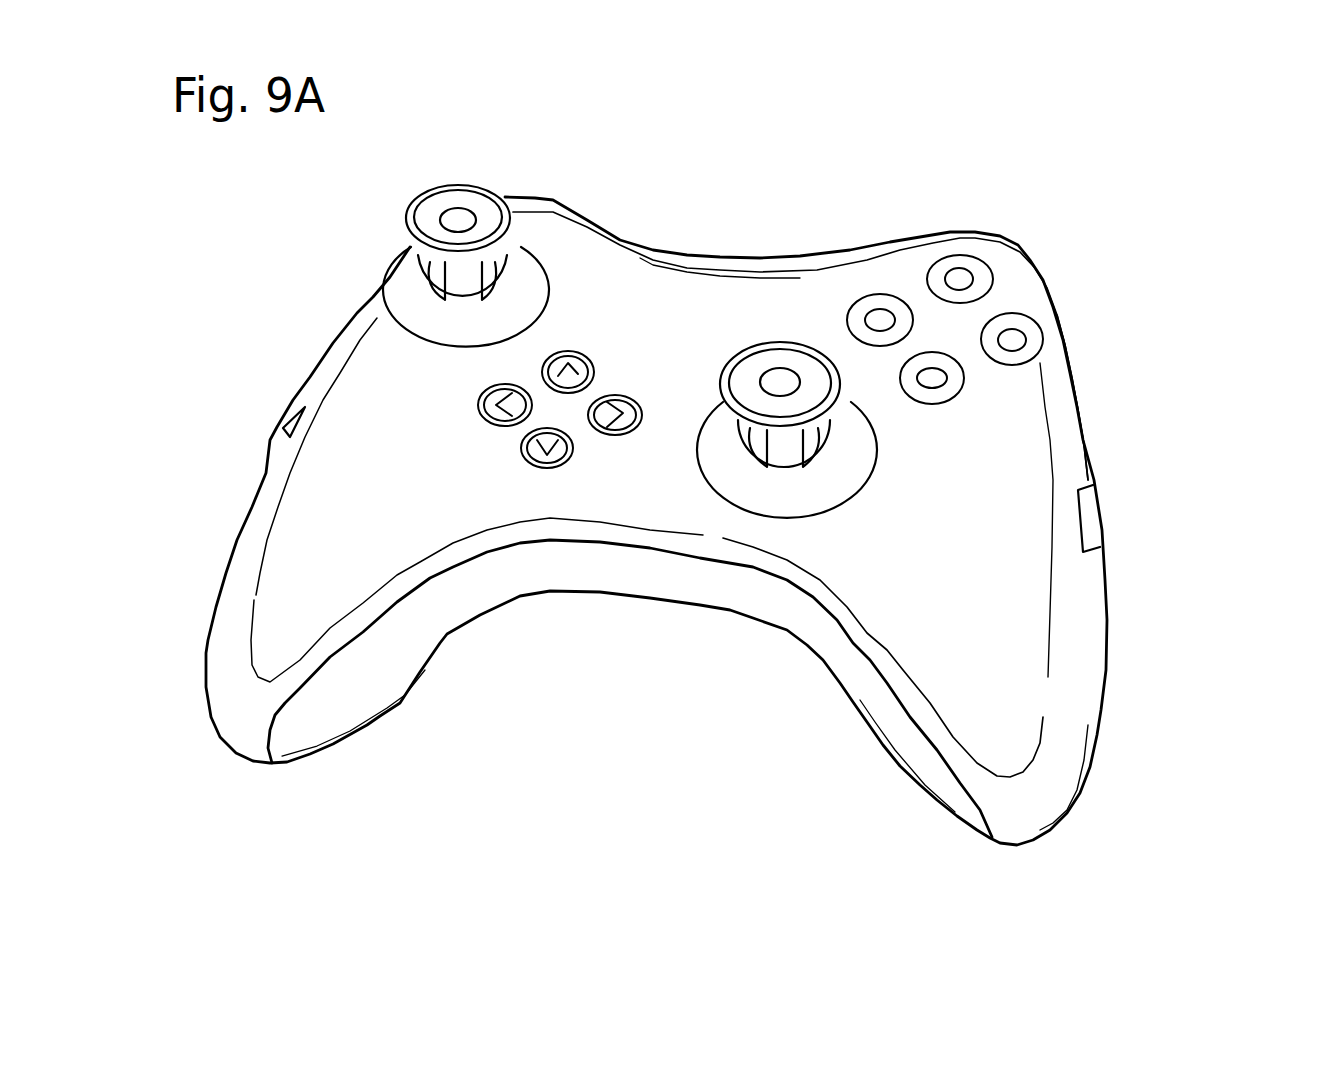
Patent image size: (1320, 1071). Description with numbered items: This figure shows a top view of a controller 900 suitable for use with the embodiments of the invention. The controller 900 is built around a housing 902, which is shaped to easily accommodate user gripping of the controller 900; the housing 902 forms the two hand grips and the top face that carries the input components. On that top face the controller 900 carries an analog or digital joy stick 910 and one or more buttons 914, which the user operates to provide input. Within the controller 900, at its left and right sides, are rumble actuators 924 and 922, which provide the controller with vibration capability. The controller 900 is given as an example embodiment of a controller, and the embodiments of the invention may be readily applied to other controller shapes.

The controller 900 is at (701, 523).
The housing 902 is at (1070, 437).
The analog or digital joy stick 910 is at (734, 364).
The button 914 is at (958, 272).
The rumble actuator 922 is at (1100, 540).
The rumble actuator 924 is at (280, 440).